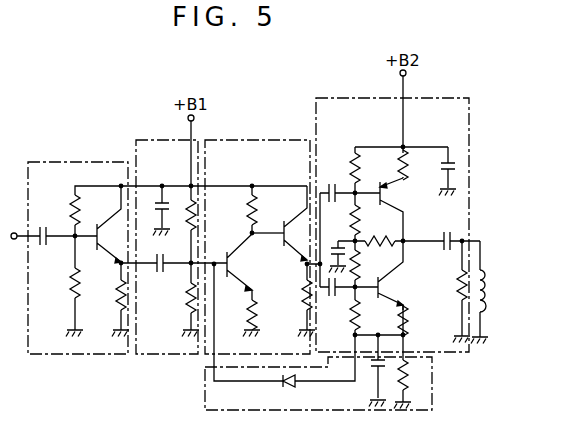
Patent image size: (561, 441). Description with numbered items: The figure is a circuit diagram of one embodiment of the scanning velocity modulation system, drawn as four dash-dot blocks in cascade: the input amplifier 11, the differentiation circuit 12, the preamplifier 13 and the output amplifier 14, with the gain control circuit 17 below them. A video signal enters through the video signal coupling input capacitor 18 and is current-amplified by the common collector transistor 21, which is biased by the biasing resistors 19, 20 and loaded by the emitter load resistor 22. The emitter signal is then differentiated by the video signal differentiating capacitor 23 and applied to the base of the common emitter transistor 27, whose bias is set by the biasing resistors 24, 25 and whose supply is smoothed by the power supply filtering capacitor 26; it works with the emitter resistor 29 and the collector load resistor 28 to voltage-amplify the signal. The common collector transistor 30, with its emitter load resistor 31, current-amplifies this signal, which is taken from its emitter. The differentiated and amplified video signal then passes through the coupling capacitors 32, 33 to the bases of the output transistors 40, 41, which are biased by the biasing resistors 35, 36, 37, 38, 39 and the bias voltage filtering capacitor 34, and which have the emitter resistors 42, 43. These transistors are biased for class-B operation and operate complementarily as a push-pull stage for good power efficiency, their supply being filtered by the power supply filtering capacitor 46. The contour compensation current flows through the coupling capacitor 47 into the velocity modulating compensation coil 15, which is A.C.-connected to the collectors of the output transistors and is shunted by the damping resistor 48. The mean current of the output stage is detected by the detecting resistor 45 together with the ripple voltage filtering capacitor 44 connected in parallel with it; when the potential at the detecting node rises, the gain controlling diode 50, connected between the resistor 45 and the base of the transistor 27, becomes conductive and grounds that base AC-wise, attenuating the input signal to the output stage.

The amplifier 11 is at (94, 162).
The differentiation circuit 12 is at (163, 140).
The preamplifier 13 is at (249, 140).
The output amplifier 14 is at (436, 98).
The velocity modulating compensation coil 15 is at (487, 287).
The gain control circuit 17 is at (205, 398).
The video signal coupling input capacitor 18 is at (46, 226).
The biasing resistor 19 is at (72, 290).
The biasing resistor 20 is at (72, 198).
The common collector transistor 21 is at (98, 224).
The emitter load resistor 22 is at (118, 295).
The video signal differentiating capacitor 23 is at (160, 273).
The biasing resistor 24 is at (187, 202).
The biasing resistor 25 is at (189, 302).
The power supply filtering capacitor 26 is at (157, 192).
The common emitter transistor 27 is at (228, 252).
The collector load resistor 28 is at (256, 207).
The emitter resistor 29 is at (249, 316).
The common collector transistor 30 is at (292, 250).
The emitter load resistor 31 is at (302, 300).
The coupling capacitor 32 is at (332, 183).
The coupling capacitor 33 is at (332, 296).
The bias voltage filtering capacitor 34 is at (338, 248).
The biasing resistor 35 is at (361, 168).
The biasing resistor 36 is at (351, 220).
The biasing resistor 37 is at (359, 265).
The biasing resistor 38 is at (360, 316).
The biasing resistor 39 is at (380, 239).
The output transistor 40 is at (386, 190).
The output transistor 41 is at (400, 272).
The emitter resistor 42 is at (407, 166).
The emitter resistor 43 is at (406, 316).
The ripple voltage filtering capacitor 44 is at (372, 376).
The detecting resistor 45 is at (408, 374).
The power supply filtering capacitor 46 is at (448, 160).
The coupling capacitor 47 is at (452, 234).
The damping resistor 48 is at (459, 287).
The gain controlling diode 50 is at (290, 386).